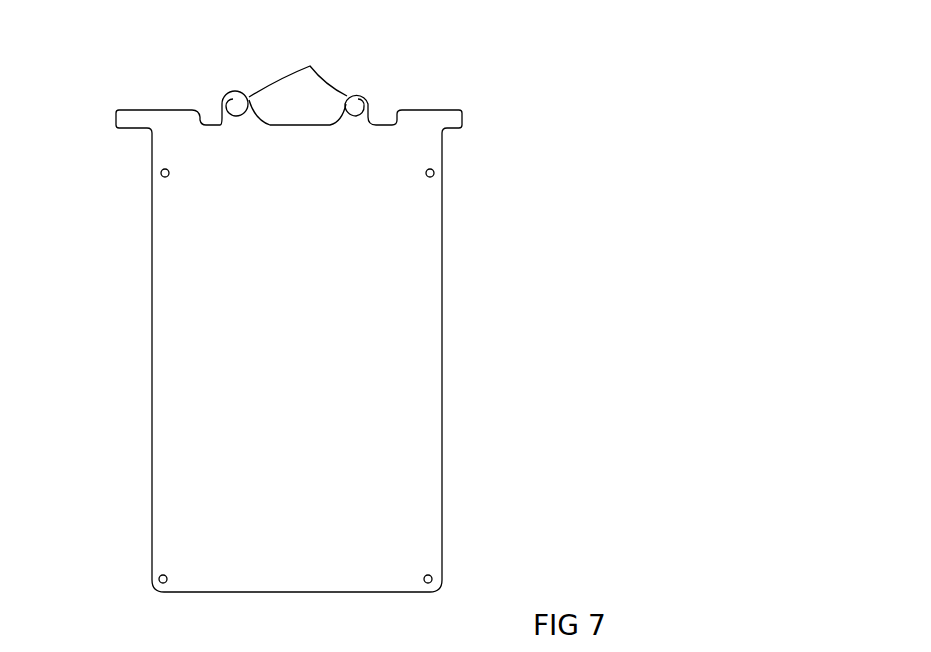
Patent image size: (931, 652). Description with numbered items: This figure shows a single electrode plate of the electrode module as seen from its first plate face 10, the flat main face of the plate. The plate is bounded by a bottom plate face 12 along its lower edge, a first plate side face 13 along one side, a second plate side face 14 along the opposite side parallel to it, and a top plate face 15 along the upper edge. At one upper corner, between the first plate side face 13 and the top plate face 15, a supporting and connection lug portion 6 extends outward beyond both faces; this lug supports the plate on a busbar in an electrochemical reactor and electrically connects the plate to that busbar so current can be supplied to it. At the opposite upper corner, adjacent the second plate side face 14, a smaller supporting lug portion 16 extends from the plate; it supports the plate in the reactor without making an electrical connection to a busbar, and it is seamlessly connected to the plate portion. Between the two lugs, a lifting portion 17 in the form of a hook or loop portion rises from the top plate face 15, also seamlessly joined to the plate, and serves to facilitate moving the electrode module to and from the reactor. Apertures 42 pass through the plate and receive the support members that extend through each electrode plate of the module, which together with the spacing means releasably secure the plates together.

The first plate face 10 is at (322, 334).
The supporting and connection lug portion 6 is at (131, 117).
The top plate face 15 is at (212, 108).
The lifting portion 17 is at (313, 64).
The supporting lug portion 16 is at (453, 118).
The apertures 42 is at (434, 174).
The second plate side face 14 is at (150, 338).
The first plate side face 13 is at (445, 351).
The bottom plate face 12 is at (251, 594).